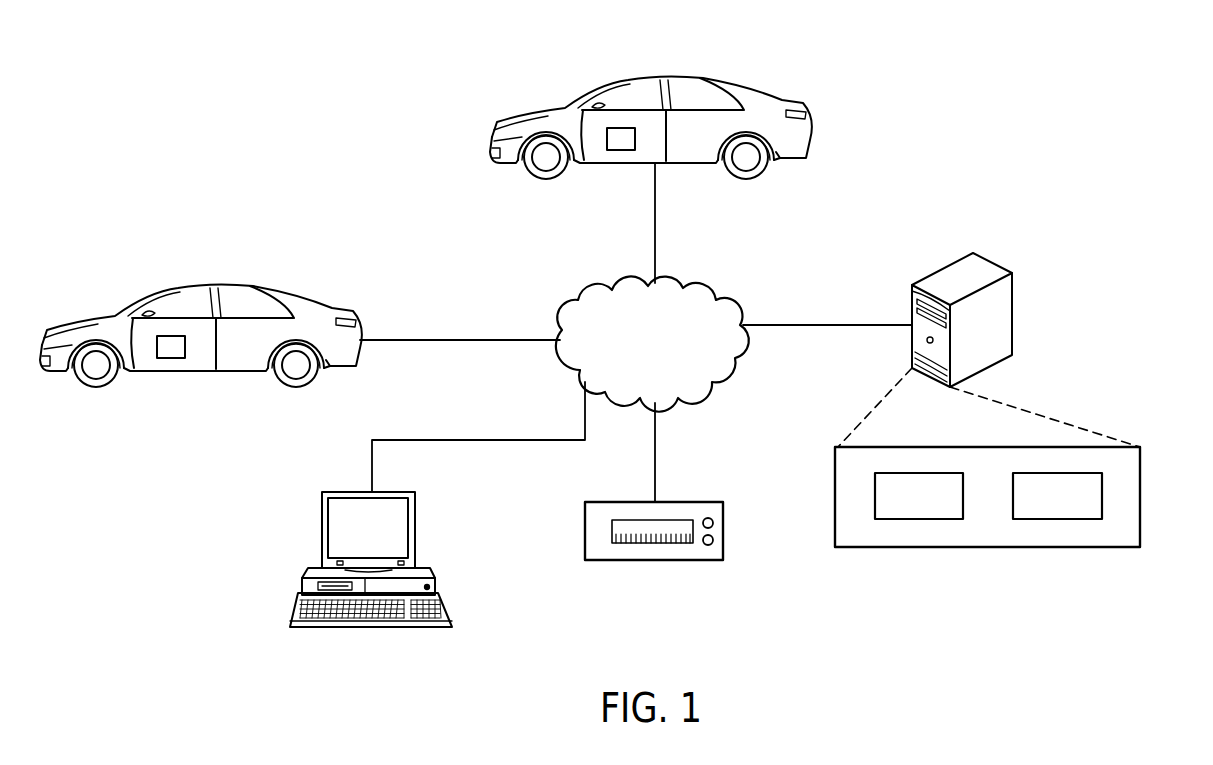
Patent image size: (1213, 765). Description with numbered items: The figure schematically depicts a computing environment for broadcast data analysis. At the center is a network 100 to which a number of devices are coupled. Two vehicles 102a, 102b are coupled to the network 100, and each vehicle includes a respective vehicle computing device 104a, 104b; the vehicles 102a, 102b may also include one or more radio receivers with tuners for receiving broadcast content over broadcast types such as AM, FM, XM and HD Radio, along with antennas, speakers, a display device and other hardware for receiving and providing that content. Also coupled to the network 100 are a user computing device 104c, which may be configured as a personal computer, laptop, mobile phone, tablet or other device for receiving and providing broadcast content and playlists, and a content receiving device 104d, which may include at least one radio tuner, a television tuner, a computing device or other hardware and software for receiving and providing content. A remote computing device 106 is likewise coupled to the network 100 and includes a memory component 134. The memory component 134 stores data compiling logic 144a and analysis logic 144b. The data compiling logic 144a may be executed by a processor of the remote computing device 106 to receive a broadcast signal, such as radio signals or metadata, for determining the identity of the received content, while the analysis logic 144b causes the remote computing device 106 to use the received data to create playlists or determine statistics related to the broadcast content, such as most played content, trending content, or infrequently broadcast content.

The network 100 is at (675, 357).
The vehicle 102a is at (778, 98).
The vehicle 102b is at (328, 306).
The vehicle computing device 104a is at (617, 150).
The vehicle computing device 104b is at (167, 358).
The user computing device 104c is at (302, 585).
The content receiving device 104d is at (648, 560).
The remote computing device 106 is at (1012, 318).
The memory component 134 is at (1140, 499).
The data compiling logic 144a is at (947, 509).
The analysis logic 144b is at (1087, 509).